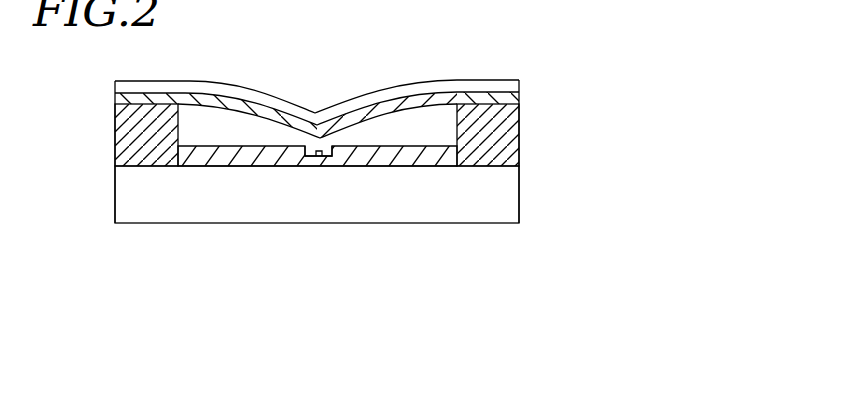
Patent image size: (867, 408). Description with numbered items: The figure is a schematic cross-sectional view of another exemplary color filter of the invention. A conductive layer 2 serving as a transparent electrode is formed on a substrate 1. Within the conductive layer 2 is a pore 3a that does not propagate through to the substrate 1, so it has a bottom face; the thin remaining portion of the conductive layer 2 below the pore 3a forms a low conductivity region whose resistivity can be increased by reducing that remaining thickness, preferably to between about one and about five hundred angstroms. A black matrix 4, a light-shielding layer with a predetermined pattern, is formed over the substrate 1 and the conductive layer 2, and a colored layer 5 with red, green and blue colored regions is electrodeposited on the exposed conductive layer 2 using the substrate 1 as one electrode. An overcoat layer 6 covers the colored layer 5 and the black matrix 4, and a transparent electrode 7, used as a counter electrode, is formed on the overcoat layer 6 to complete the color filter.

The substrate 1 is at (177, 198).
The conductive layer 2 is at (242, 165).
The pore 3a is at (314, 158).
The black matrix 4 is at (505, 130).
The colored layer 5 is at (223, 122).
The overcoat layer 6 is at (282, 123).
The transparent electrode 7 is at (465, 82).